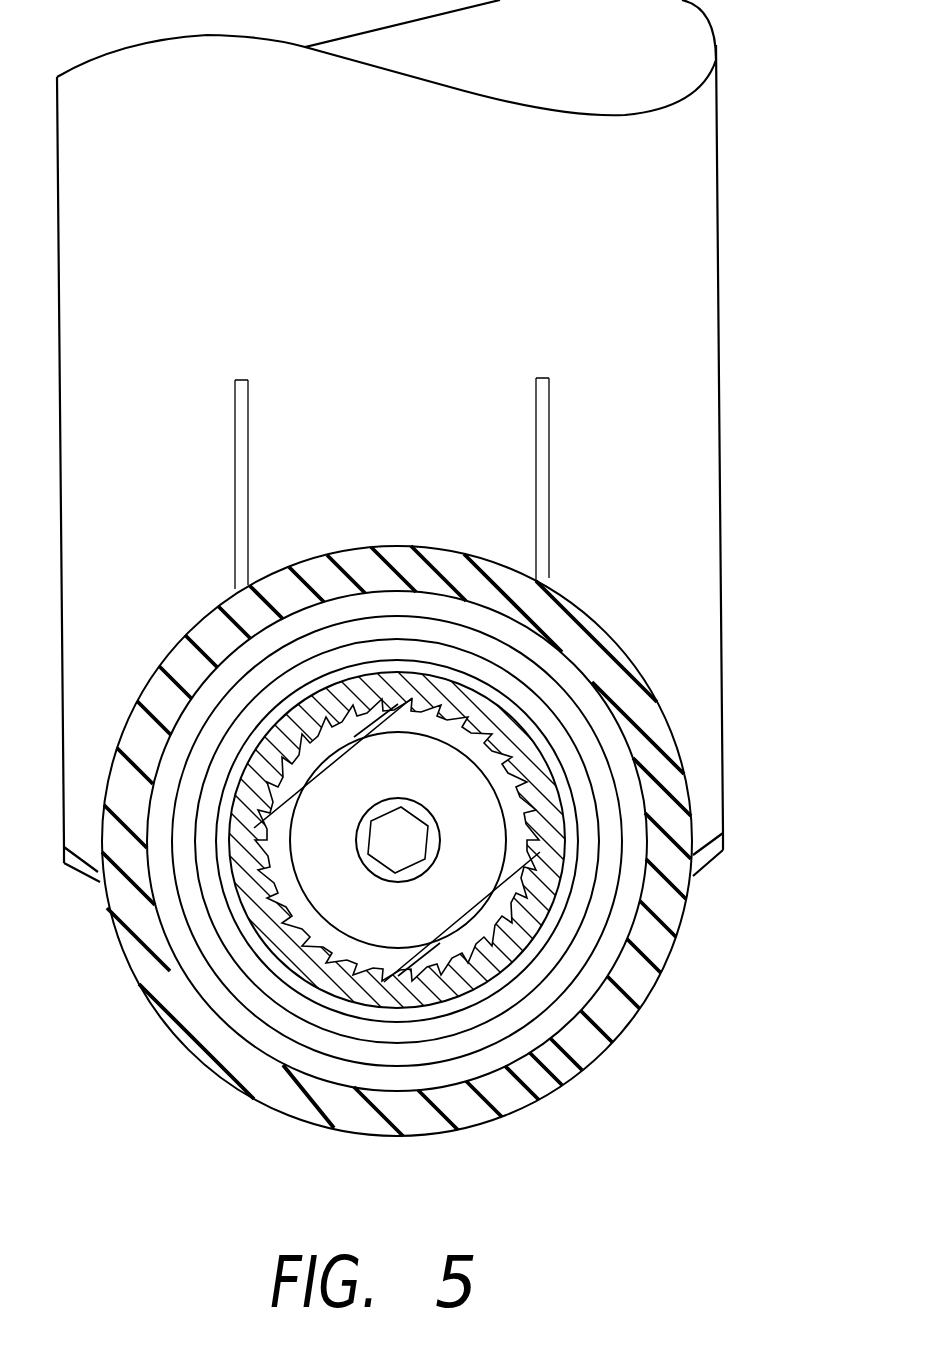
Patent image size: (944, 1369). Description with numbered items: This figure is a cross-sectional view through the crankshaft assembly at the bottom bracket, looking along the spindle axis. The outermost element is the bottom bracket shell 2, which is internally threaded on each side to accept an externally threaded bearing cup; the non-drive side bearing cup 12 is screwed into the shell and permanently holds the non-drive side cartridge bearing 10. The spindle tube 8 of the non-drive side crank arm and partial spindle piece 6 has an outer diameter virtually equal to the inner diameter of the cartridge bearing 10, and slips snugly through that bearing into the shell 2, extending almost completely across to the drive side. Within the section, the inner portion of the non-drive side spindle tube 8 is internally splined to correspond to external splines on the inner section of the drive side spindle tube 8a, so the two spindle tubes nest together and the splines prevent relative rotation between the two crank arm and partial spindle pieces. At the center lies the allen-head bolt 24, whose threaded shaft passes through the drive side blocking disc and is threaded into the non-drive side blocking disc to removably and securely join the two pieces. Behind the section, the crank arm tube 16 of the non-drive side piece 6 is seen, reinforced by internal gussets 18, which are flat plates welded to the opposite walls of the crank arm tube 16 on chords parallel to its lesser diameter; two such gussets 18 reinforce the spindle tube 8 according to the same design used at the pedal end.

The bottom bracket shell 2 is at (470, 1123).
The non-drive side crank arm and partial spindle piece 6 is at (718, 215).
The spindle tube 8 is at (483, 707).
The spindle tube 8a is at (476, 934).
The non-drive side cartridge bearing 10 is at (617, 917).
The non-drive side bearing cup 12 is at (588, 978).
The crank arm tube 16 is at (723, 425).
The internal gussets 18 is at (250, 447).
The allen-head bolt 24 is at (443, 800).